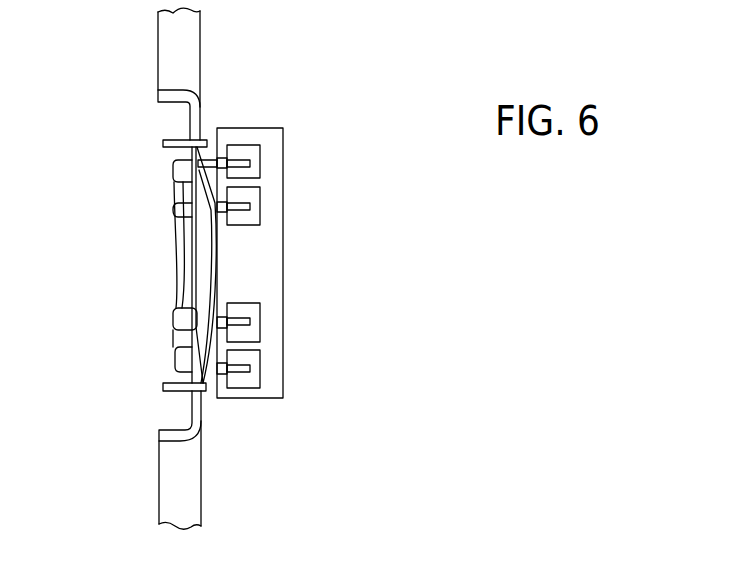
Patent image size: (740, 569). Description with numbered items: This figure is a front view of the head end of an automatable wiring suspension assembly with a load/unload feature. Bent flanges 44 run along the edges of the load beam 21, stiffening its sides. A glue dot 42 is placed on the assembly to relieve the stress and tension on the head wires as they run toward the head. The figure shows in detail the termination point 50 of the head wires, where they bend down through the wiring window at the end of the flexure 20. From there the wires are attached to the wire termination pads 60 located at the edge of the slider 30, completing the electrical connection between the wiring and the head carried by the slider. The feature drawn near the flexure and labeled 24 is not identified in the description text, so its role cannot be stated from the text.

The bent flanges 44 is at (187, 52).
The load beam 21 is at (202, 412).
The flexure 20 is at (163, 395).
The slider 30 is at (262, 266).
The termination point 50 is at (248, 155).
The wire termination pads 60 is at (250, 370).
The lever member 24 is at (205, 198).
The glue dot 42 is at (180, 273).